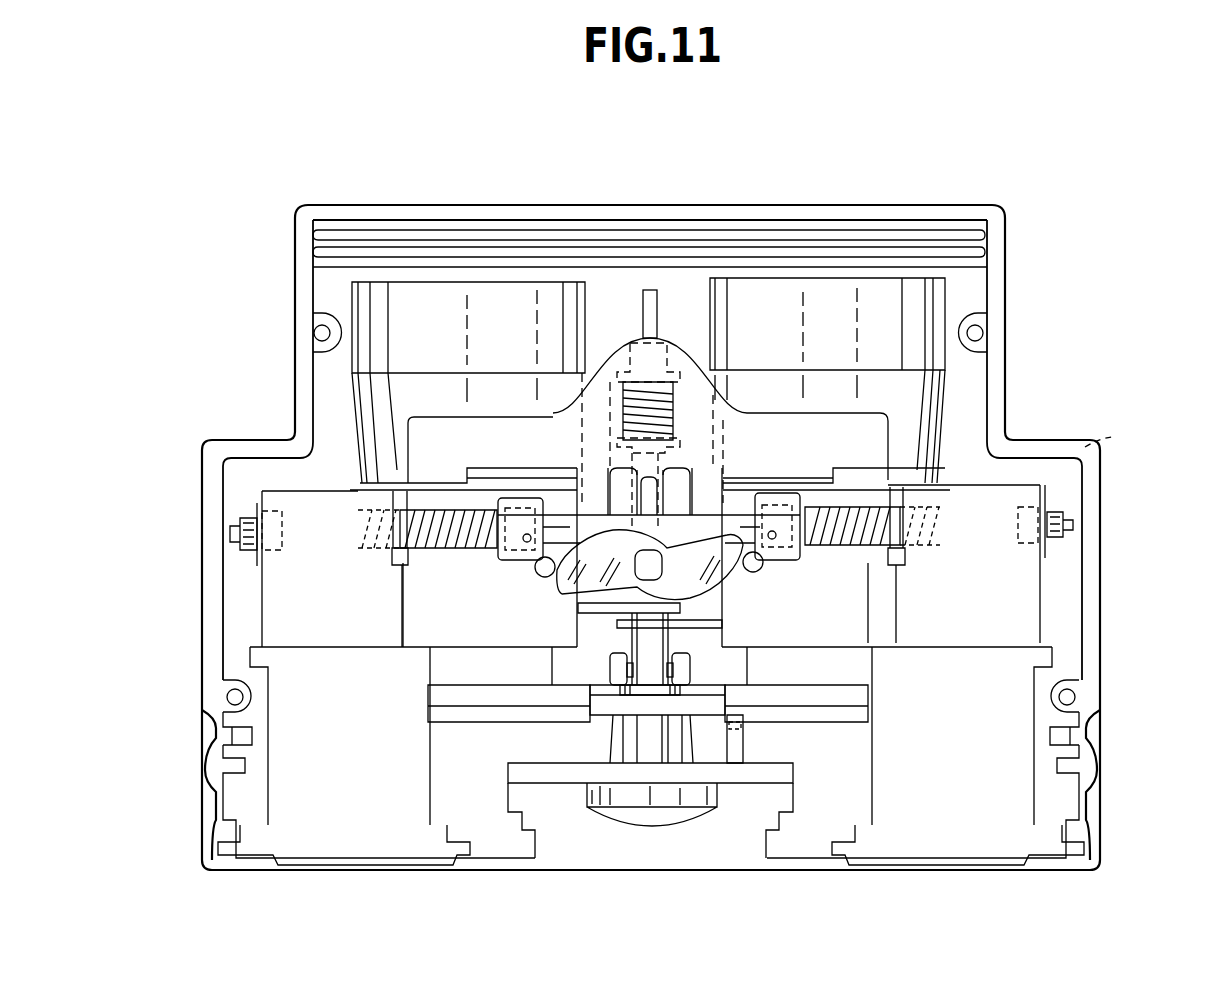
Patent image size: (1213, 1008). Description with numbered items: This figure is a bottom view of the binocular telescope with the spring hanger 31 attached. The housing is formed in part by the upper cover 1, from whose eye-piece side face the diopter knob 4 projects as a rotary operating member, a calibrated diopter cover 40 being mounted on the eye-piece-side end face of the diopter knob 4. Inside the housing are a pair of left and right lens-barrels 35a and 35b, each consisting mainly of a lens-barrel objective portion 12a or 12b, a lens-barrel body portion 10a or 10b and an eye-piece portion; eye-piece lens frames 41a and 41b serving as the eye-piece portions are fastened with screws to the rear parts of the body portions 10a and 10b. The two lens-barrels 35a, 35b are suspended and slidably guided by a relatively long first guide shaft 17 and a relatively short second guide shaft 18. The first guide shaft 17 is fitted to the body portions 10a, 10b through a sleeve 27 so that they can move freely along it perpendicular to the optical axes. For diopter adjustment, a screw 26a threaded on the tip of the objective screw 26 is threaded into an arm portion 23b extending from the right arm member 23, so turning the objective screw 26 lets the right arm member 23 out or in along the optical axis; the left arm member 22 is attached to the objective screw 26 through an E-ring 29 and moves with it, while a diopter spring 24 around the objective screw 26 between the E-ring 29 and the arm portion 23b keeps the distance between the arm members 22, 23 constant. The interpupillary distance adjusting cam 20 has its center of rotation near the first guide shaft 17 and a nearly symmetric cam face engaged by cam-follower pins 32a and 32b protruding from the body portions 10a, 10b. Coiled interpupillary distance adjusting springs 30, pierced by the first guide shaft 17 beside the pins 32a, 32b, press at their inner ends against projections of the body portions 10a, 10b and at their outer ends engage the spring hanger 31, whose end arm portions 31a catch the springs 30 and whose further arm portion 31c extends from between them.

The upper cover 1 is at (762, 212).
The diopter knob 4 is at (625, 800).
The lens-barrel body portion 10a is at (290, 672).
The lens-barrel body portion 10b is at (1018, 617).
The lens-barrel objective portion 12a is at (388, 407).
The lens-barrel objective portion 12b is at (928, 307).
The first guide shaft 17 is at (1073, 521).
The second guide shaft 18 is at (706, 707).
The interpupillary distance adjusting cam 20 is at (727, 548).
The left arm member 22 is at (700, 480).
The right arm member 23 is at (583, 413).
The arm portion 23b is at (612, 405).
The diopter spring 24 is at (641, 292).
The objective screw 26 is at (655, 395).
The screw 26a is at (627, 378).
The sleeve 27 is at (262, 502).
The E-ring 29 is at (693, 437).
The interpupillary distance adjusting spring 30 is at (383, 543).
The spring hanger 31 is at (872, 447).
The arm portion 31a is at (1129, 442).
The arm portion 31c is at (545, 448).
The cam-follower pin 32a is at (538, 575).
The cam-follower pin 32b is at (757, 572).
The lens-barrel 35a is at (292, 564).
The lens-barrel 35b is at (1010, 583).
The calibrated diopter cover 40 is at (663, 818).
The eye-piece lens frame 41a is at (262, 842).
The eye-piece lens frame 41b is at (1045, 835).